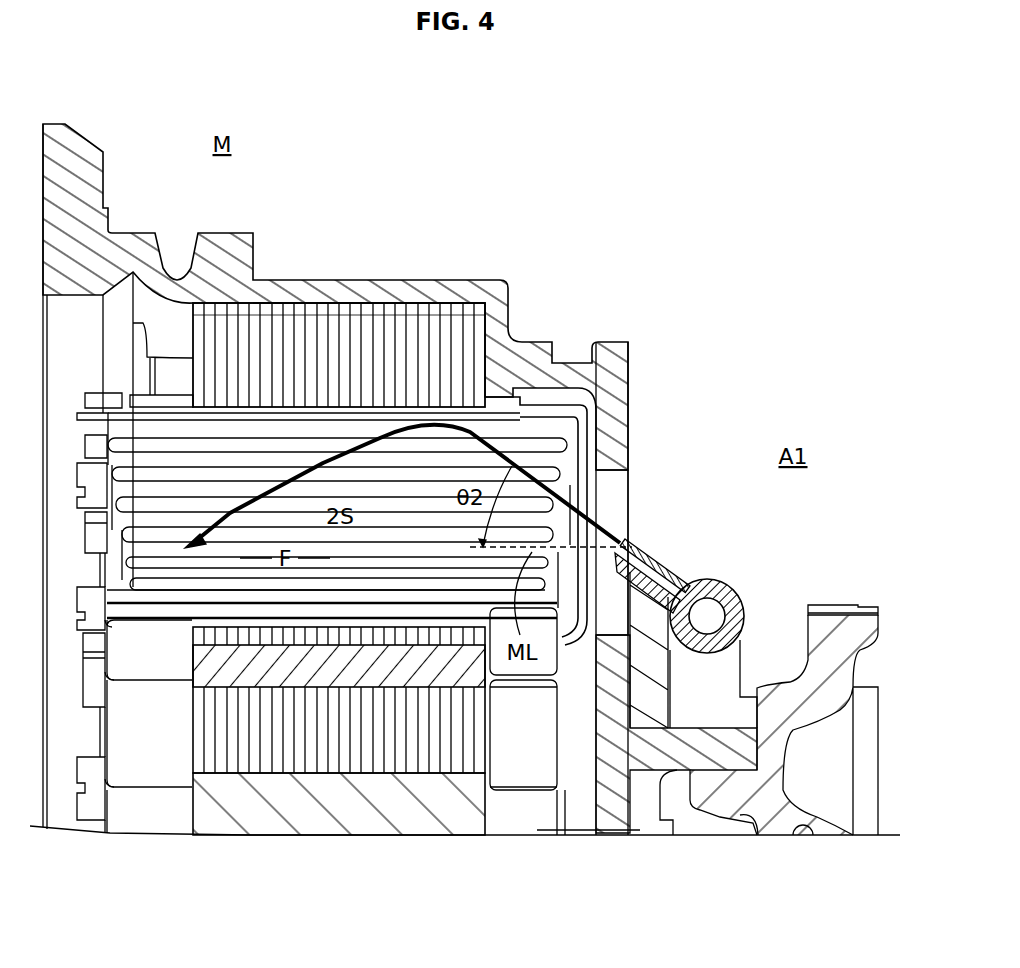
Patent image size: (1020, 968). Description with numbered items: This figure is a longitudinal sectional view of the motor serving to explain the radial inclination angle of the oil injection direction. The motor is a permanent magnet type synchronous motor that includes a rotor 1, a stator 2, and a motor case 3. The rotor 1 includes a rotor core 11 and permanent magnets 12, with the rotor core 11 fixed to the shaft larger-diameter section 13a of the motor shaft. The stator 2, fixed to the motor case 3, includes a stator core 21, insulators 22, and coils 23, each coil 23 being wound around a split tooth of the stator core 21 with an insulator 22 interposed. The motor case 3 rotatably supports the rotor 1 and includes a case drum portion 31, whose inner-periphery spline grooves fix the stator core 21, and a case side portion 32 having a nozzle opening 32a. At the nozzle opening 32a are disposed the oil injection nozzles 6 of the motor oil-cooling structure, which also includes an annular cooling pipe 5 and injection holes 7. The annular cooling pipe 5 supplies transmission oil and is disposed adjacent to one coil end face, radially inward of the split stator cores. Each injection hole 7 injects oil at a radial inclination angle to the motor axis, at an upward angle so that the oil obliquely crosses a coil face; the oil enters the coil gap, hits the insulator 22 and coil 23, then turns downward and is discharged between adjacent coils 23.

The rotor 1 is at (432, 838).
The stator 2 is at (436, 300).
The motor case 3 is at (473, 283).
The annular cooling pipe 5 is at (743, 594).
The oil injection nozzle 6 is at (645, 668).
The injection hole 7 is at (626, 546).
The rotor core 11 is at (388, 733).
The permanent magnets 12 is at (318, 660).
The shaft larger-diameter section 13a is at (256, 805).
The stator core 21 is at (333, 358).
The insulators 22 is at (430, 411).
The coils 23 is at (218, 478).
The case drum portion 31 is at (363, 296).
The case side portion 32 is at (612, 422).
The nozzle opening 32a is at (628, 485).